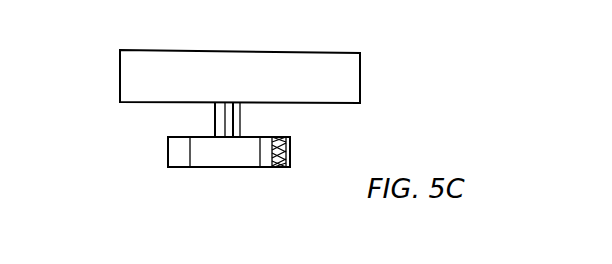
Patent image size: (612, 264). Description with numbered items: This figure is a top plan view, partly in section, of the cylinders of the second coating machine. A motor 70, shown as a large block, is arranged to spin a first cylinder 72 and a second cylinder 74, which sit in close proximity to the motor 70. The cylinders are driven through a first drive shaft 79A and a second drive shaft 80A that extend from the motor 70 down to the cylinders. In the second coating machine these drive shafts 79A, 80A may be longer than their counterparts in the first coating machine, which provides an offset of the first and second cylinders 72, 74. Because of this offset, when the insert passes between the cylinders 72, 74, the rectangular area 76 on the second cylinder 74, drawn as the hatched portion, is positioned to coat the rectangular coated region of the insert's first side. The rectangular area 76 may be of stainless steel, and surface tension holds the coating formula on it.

The motor 70 is at (150, 63).
The first cylinder 72 is at (205, 165).
The second cylinder 74 is at (172, 155).
The rectangular area 76 is at (287, 152).
The first drive shaft 79A is at (237, 113).
The second drive shaft 80A is at (235, 128).